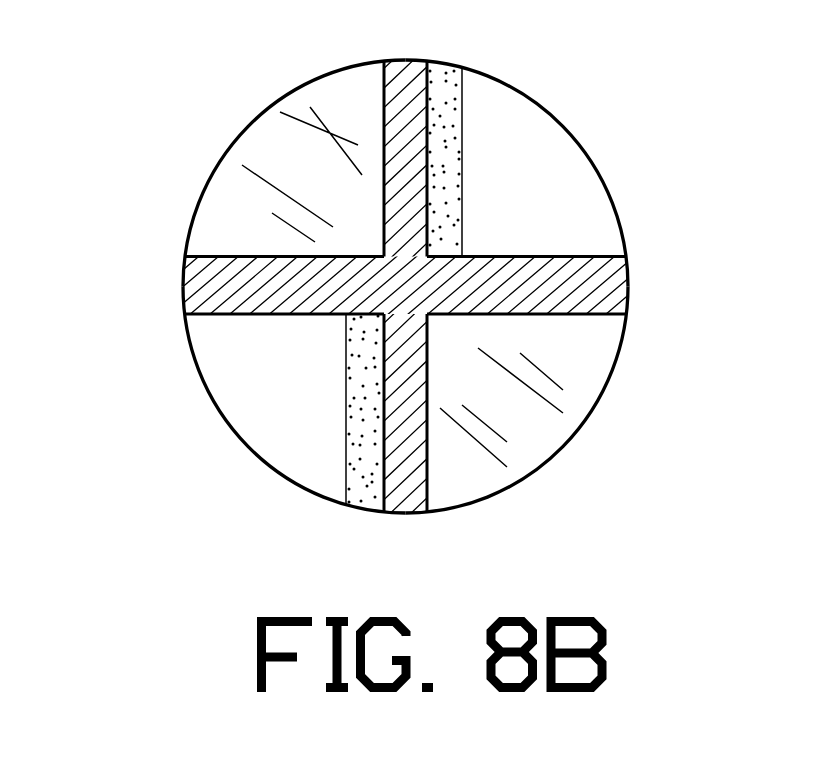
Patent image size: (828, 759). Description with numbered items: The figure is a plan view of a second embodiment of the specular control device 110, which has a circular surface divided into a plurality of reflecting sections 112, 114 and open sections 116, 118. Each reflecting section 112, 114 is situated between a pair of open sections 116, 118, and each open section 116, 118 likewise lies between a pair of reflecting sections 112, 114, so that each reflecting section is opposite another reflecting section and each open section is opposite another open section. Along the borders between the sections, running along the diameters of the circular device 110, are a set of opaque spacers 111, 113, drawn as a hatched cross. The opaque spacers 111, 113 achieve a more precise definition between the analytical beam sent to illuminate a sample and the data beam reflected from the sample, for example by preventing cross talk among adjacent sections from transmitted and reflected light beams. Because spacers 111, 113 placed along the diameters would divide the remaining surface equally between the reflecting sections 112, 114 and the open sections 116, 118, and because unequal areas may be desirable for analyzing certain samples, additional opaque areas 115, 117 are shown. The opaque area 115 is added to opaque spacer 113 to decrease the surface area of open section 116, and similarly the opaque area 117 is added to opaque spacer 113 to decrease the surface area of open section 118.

The specular control device 110 is at (167, 238).
The opaque spacer 111 is at (615, 265).
The reflecting section 112 is at (253, 142).
The opaque spacer 113 is at (393, 73).
The reflecting section 114 is at (548, 440).
The opaque area 115 is at (360, 500).
The open section 116 is at (255, 427).
The opaque area 117 is at (447, 77).
The open section 118 is at (560, 152).